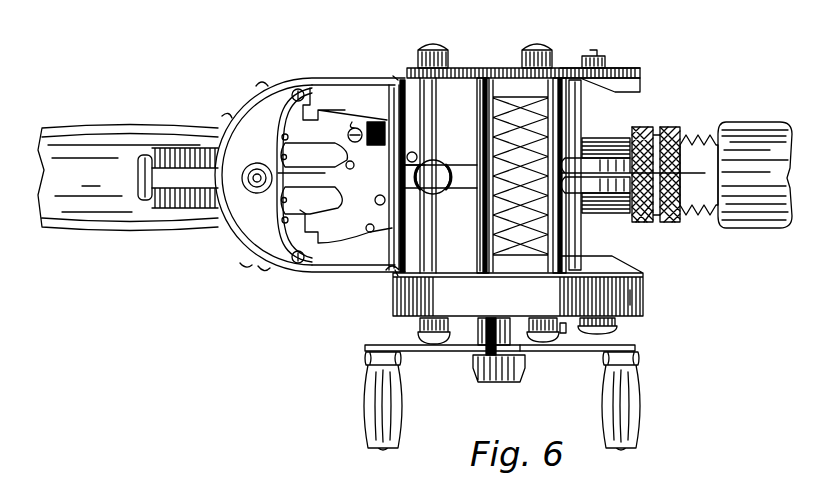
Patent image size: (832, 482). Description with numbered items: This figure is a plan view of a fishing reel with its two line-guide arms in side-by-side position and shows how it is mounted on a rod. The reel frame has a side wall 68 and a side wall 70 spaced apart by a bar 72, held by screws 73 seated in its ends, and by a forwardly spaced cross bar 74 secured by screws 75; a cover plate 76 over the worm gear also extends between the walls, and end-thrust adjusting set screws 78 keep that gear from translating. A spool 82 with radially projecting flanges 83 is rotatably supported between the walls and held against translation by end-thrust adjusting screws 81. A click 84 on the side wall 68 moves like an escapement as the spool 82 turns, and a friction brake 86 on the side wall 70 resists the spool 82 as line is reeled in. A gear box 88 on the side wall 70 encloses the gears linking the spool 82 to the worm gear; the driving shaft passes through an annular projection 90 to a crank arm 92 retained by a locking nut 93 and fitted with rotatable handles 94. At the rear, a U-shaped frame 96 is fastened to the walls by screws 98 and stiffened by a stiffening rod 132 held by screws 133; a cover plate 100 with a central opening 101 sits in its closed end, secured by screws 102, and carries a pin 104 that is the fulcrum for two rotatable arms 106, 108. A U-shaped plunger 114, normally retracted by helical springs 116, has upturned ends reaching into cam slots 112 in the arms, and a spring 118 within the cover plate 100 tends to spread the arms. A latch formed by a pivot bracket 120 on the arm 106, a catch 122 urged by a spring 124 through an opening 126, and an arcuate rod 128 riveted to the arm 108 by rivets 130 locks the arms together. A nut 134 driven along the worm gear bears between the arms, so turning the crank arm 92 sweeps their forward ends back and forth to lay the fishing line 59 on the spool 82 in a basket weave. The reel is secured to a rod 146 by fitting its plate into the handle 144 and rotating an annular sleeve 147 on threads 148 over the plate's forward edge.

The handle 144 is at (76, 168).
The U-shaped plunger 114 is at (142, 154).
The helical springs 116 is at (173, 148).
The screws 102 is at (225, 118).
The central opening 101 is at (255, 166).
The cover plate 100 is at (262, 122).
The pin 104 is at (248, 188).
The spring 118 is at (285, 134).
The U-shaped frame 96 is at (333, 78).
The screws 98 is at (400, 73).
The screws 133 is at (393, 76).
The rotatable arm 106 is at (333, 122).
The pivot bracket 120 is at (343, 145).
The rotatable arm 108 is at (327, 230).
The cam slot 112 is at (310, 212).
The spring 124 is at (363, 140).
The catch 122 is at (385, 147).
The opening 126 is at (385, 180).
The arcuate rod 128 is at (388, 180).
The rivets 130 is at (441, 208).
The stiffening rod 132 is at (396, 233).
The nut 134 is at (440, 175).
The cover plate 76 is at (436, 82).
The end-thrust adjusting set screws 78 is at (430, 44).
The bar 72 is at (480, 92).
The screws 73 is at (483, 66).
The locking nut 93 is at (493, 373).
The spool 82 is at (575, 125).
The screws 75 is at (558, 66).
The end-thrust adjusting screws 81 is at (534, 44).
The click 84 is at (593, 54).
The cross bar 74 is at (606, 56).
The side wall 68 is at (642, 73).
The flanges 83 is at (600, 118).
The fishing line 59 is at (600, 222).
The annular sleeve 147 is at (680, 127).
The threads 148 is at (693, 137).
The rod 146 is at (760, 200).
The side wall 70 is at (645, 280).
The gear box 88 is at (630, 298).
The friction brake 86 is at (618, 328).
The crank arm 92 is at (634, 349).
The annular projection 90 is at (522, 343).
The rotatable handles 94 is at (378, 398).